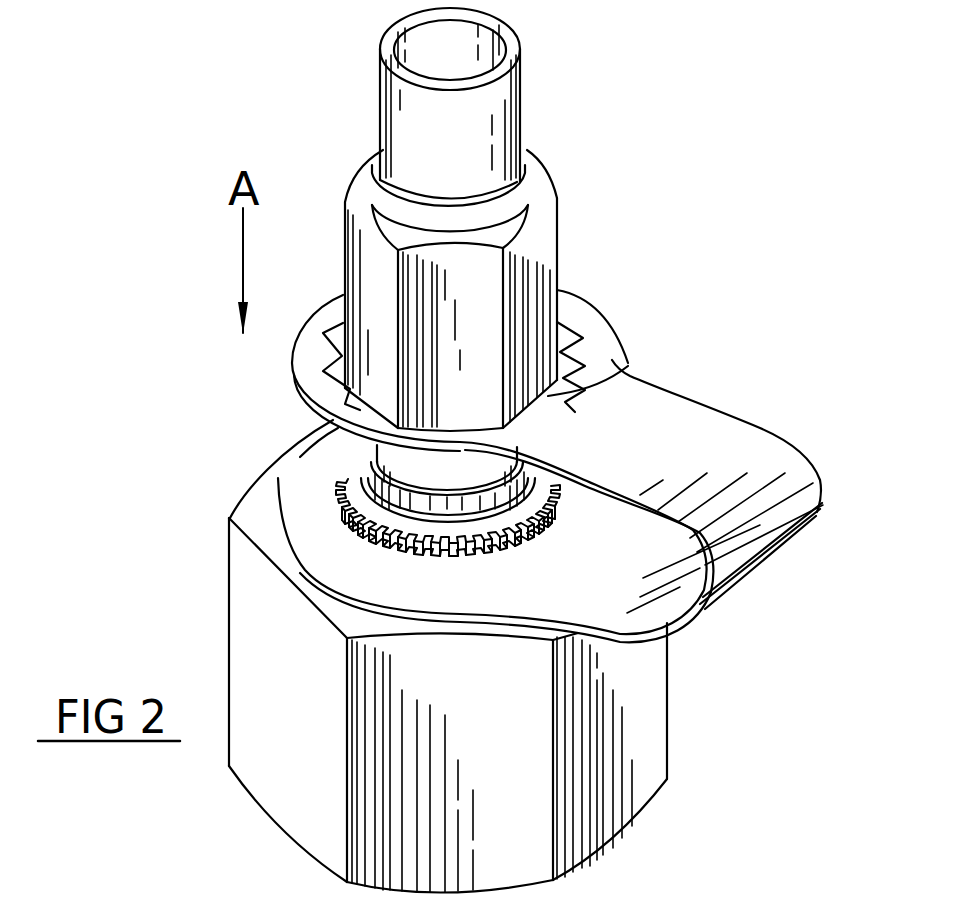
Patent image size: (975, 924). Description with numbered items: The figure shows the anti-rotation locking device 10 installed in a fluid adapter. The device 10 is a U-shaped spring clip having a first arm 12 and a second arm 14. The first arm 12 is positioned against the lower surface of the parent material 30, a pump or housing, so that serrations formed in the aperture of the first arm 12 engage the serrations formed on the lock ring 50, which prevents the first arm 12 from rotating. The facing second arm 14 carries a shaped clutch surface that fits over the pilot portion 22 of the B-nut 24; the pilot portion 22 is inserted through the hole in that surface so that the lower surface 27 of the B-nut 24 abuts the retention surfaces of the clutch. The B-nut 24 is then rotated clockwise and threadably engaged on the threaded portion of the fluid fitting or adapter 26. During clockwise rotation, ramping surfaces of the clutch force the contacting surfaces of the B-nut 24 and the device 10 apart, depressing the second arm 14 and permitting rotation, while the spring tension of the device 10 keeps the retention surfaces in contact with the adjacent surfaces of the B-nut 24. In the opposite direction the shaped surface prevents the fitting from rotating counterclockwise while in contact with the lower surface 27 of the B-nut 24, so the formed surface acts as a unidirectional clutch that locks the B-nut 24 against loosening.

The anti-rotation locking device 10 is at (785, 406).
The first arm 12 is at (318, 535).
The second arm 14 is at (588, 310).
The pilot portion 22 is at (383, 453).
The B-nut 24 is at (560, 233).
The fluid fitting or adapter 26 is at (423, 512).
The lower surface 27 is at (632, 378).
The parent material 30 is at (667, 752).
The lock ring 50 is at (350, 490).